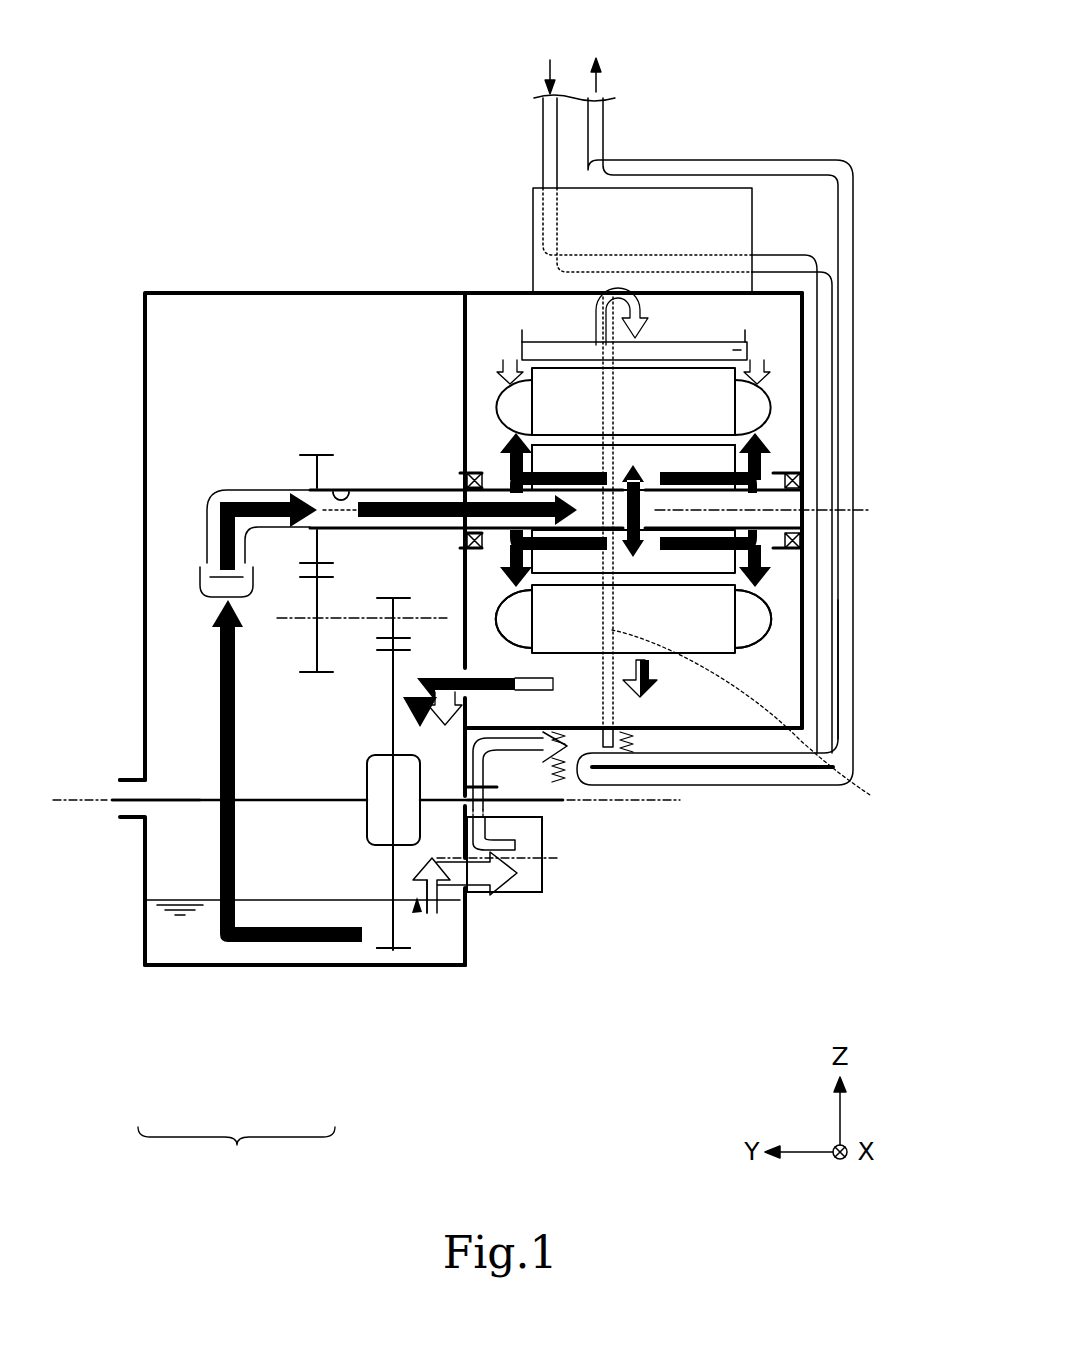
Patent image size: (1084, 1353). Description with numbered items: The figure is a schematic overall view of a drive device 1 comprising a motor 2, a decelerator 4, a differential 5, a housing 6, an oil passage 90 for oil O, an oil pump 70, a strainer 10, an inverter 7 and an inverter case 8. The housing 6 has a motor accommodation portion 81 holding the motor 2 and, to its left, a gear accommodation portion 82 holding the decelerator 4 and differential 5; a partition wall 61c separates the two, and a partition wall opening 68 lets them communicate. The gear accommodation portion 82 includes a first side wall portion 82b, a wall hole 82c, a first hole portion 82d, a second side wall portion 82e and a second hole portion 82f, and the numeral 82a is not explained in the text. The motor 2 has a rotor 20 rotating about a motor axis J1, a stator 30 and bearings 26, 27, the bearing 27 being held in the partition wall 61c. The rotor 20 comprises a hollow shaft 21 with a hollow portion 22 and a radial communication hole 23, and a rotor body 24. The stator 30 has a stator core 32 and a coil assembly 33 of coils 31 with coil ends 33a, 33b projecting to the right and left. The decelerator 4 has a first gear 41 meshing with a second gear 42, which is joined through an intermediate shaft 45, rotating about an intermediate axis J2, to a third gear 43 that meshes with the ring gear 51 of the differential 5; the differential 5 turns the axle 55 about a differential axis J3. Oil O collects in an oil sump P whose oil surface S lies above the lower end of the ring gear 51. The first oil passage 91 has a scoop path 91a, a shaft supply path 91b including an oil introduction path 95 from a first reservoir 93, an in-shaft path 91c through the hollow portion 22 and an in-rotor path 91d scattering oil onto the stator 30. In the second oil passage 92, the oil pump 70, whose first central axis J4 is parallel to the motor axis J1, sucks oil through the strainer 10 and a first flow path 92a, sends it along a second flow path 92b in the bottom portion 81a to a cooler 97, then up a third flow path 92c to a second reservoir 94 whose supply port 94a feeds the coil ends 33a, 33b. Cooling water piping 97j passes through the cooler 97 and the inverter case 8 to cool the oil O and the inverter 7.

The drive device 1 is at (812, 128).
The motor 2 is at (722, 574).
The decelerator 4 is at (358, 660).
The differential 5 is at (362, 825).
The housing 6 is at (805, 287).
The inverter 7 is at (650, 248).
The inverter case 8 is at (733, 190).
The strainer 10 is at (413, 913).
The rotor 20 is at (728, 468).
The shaft 21 is at (363, 488).
The hollow portion 22 is at (347, 493).
The communication hole 23 is at (645, 528).
The rotor body 24 is at (712, 457).
The bearing 26 is at (803, 484).
The bearing 27 is at (473, 467).
The stator 30 is at (722, 592).
The coil 31 is at (717, 413).
The stator core 32 is at (722, 445).
The coil assembly 33 is at (757, 650).
The coil end 33a is at (773, 617).
The coil end 33b is at (503, 640).
The first gear 41 is at (323, 453).
The second gear 42 is at (325, 673).
The third gear 43 is at (385, 652).
The intermediate shaft 45 is at (350, 617).
The ring gear 51 is at (387, 952).
The axle 55 is at (197, 800).
The partition wall 61c is at (463, 322).
The partition wall opening 68 is at (467, 700).
The oil pump 70 is at (528, 887).
The motor accommodation portion 81 is at (482, 292).
The bottom portion 81a is at (753, 732).
The gear accommodation portion 82 is at (293, 292).
The gear housing bottom 82a is at (208, 968).
The first side wall portion 82b is at (470, 925).
The wall hole 82c is at (480, 895).
The first hole portion 82d is at (500, 818).
The second side wall portion 82e is at (142, 957).
The second hole portion 82f is at (123, 785).
The oil passage 90 is at (236, 1152).
The first oil passage 91 is at (257, 863).
The scoop path 91a is at (218, 683).
The shaft supply path 91b is at (270, 500).
The in-shaft path 91c is at (423, 502).
The in-rotor path 91d is at (762, 553).
The second oil passage 92 is at (429, 929).
The first flow path 92a is at (457, 880).
The second flow path 92b is at (478, 763).
The third flow path 92c is at (827, 768).
The first reservoir 93 is at (195, 580).
The second reservoir 94 is at (755, 332).
The supply port 94a is at (522, 340).
The oil introduction path 95 is at (228, 488).
The cooler 97 is at (610, 790).
The cooling water piping 97j is at (853, 730).
The motor axis J1 is at (870, 512).
The intermediate axis J2 is at (423, 610).
The differential axis J3 is at (663, 803).
The first central axis J4 is at (557, 862).
The oil O is at (437, 948).
The oil sump P is at (172, 950).
The oil surface S is at (180, 898).